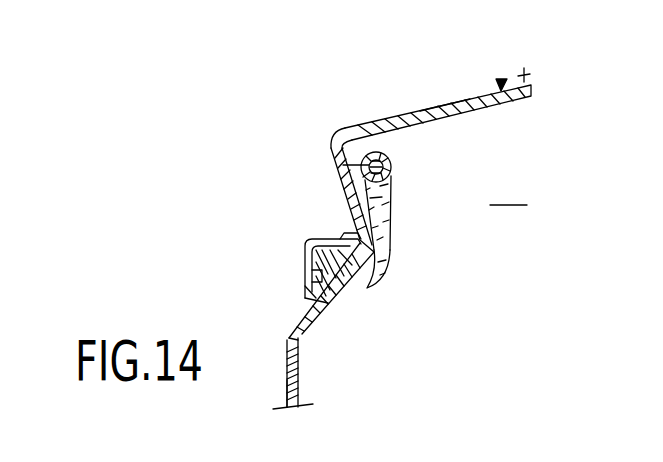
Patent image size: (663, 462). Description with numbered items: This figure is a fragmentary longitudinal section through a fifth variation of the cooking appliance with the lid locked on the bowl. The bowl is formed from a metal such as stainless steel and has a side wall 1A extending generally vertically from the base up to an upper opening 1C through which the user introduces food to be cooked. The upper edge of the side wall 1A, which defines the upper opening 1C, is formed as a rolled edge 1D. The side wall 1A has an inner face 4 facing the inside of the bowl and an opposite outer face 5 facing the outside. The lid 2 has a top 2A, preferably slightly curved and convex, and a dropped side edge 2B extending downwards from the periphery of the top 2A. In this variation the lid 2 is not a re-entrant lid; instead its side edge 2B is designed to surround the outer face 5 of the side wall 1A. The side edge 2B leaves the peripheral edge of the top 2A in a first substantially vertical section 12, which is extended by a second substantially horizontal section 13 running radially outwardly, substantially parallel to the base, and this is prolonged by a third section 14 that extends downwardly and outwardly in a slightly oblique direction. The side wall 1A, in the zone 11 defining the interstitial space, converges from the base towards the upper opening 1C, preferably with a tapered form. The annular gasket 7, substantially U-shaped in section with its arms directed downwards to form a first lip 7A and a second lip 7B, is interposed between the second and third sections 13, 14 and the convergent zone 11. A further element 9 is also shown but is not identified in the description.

The lid 2 is at (499, 76).
The top 2A is at (446, 104).
The side edge 2B is at (322, 188).
The first section 12 is at (331, 156).
The rolled edge 1D is at (392, 166).
The upper opening 1C is at (508, 189).
The seal body 9 is at (393, 224).
The second section 13 is at (342, 237).
The annular gasket 7 is at (312, 260).
The third section 14 is at (313, 271).
The second lip 7B is at (307, 290).
The first lip 7A is at (372, 285).
The zone 11 is at (336, 279).
The outer face 5 is at (277, 332).
The inner face 4 is at (299, 354).
The side wall 1A is at (286, 382).